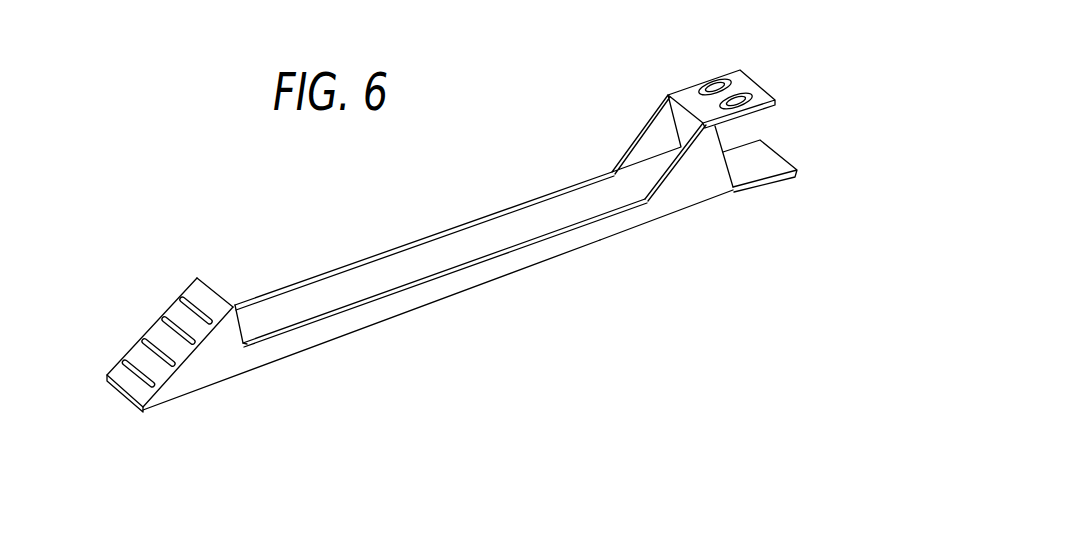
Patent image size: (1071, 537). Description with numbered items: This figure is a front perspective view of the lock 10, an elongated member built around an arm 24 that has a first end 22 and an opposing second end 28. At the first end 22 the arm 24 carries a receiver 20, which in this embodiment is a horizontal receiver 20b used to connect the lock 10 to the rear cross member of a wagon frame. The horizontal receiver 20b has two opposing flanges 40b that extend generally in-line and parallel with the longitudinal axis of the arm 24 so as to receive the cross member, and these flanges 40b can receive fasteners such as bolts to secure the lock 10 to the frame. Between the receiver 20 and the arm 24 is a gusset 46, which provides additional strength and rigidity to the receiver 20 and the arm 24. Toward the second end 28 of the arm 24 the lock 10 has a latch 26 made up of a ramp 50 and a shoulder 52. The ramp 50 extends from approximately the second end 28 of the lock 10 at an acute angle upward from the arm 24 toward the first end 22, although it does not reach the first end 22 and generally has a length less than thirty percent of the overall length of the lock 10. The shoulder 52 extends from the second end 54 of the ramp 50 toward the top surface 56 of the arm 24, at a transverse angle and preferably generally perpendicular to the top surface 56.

The lock 10 is at (497, 271).
The receiver 20 is at (697, 105).
The horizontal receiver 20b is at (780, 153).
The first end 22 is at (742, 190).
The arm 24 is at (397, 270).
The latch 26 is at (163, 343).
The second end 28 is at (145, 407).
The flanges 40b is at (757, 80).
The gusset 46 is at (637, 137).
The ramp 50 is at (182, 323).
The shoulder 52 is at (240, 323).
The second end of the ramp 54 is at (213, 280).
The top surface 56 is at (295, 310).